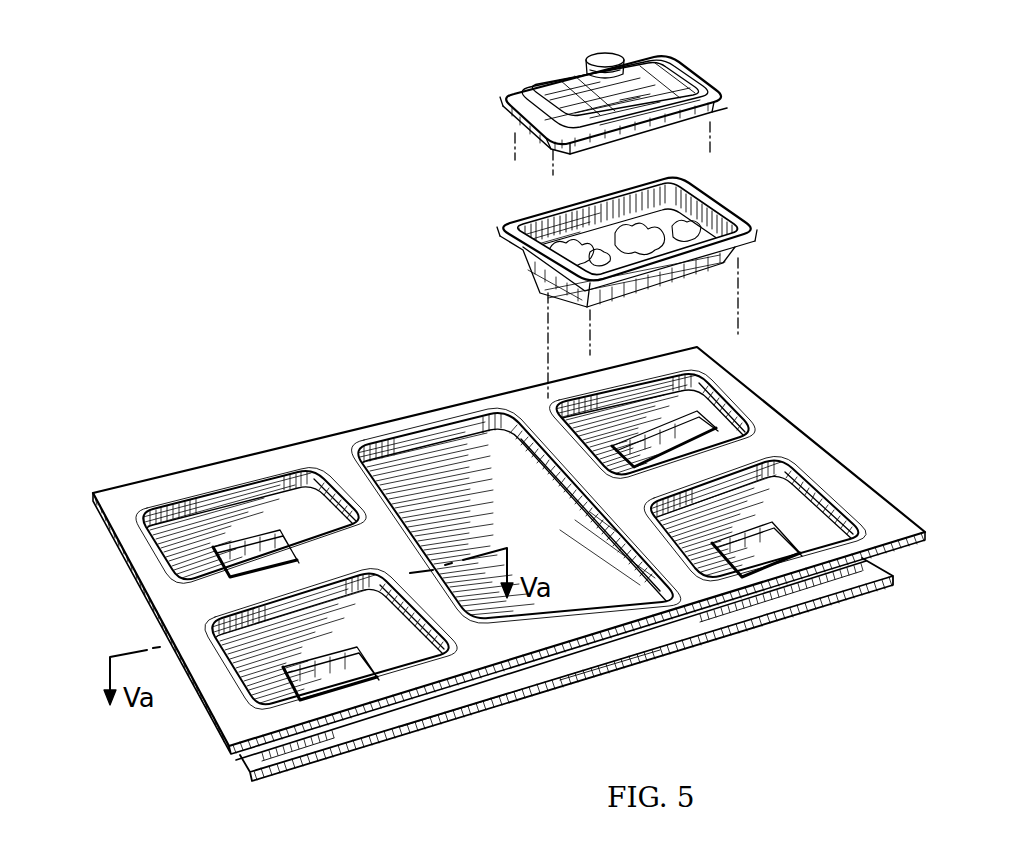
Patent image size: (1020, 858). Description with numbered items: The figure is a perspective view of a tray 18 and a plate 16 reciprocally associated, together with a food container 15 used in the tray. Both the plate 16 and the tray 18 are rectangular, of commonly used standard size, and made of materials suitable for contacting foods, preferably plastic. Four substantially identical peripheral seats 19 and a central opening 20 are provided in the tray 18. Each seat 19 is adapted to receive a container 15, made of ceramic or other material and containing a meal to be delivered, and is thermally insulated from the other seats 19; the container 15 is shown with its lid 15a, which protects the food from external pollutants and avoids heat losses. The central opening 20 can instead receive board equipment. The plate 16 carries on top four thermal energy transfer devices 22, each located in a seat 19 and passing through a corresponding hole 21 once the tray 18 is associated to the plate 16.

The container 15 is at (730, 200).
The lid 15a is at (690, 72).
The plate 16 is at (507, 702).
The tray 18 is at (387, 391).
The peripheral seat 19 is at (170, 540).
The central opening 20 is at (577, 598).
The hole 21 is at (247, 553).
The thermal energy transfer device 22 is at (223, 550).